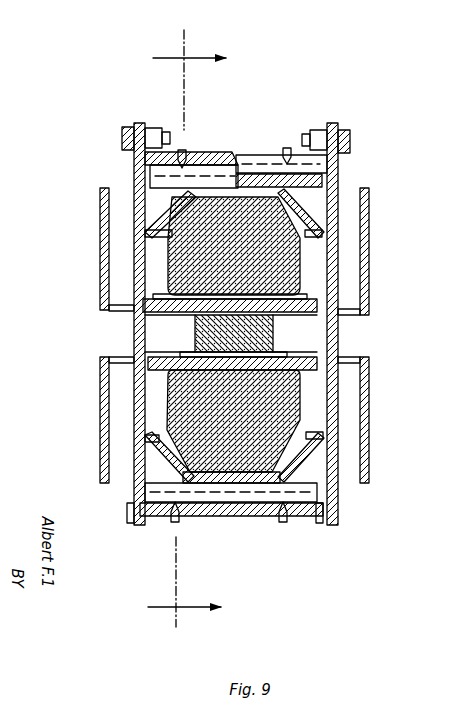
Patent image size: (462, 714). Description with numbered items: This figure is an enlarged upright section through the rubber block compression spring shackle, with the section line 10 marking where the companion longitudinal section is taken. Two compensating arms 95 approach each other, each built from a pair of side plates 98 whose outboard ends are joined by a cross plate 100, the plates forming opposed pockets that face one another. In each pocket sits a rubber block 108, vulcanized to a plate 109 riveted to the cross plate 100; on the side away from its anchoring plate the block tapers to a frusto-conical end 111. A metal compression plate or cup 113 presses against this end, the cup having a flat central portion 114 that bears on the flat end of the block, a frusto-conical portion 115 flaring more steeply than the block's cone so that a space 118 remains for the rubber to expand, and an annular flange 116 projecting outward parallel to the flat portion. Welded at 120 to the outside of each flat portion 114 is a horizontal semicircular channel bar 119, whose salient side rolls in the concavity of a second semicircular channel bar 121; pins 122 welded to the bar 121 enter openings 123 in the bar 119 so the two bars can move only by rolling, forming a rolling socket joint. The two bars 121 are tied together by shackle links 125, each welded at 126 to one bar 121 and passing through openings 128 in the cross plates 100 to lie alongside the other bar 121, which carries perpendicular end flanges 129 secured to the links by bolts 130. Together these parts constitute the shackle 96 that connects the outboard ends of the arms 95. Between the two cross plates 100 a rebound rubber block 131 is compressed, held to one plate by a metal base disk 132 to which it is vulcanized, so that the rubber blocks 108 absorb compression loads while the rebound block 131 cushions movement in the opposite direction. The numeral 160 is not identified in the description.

The section line 10— 10 is at (182, 331).
The compensating arm 95 is at (90, 238).
The shackle 96 is at (118, 517).
The side plates 98 is at (100, 200).
The cross plate 100 is at (287, 354).
The rubber block 108 is at (307, 252).
The plate 109 is at (330, 262).
The frusto-conical end 111 is at (325, 200).
The compression plate or cup 113 is at (150, 158).
The flat central portion 114 is at (222, 517).
The frusto-conical portion 115 is at (160, 200).
The annular flange 116 is at (150, 233).
The space 118 is at (110, 262).
The semicircular channel bar 119 is at (216, 152).
The weld 120 is at (338, 186).
The semicircular channel bar 121 is at (276, 152).
The pins 122 is at (183, 150).
The openings 123 is at (134, 150).
The shackle links 125 is at (134, 330).
The weld 126 is at (131, 524).
The openings 128 is at (112, 306).
The end flanges 129 is at (154, 128).
The bolts 130 is at (128, 127).
The rebound rubber block 131 is at (195, 331).
The metal base disk 132 is at (273, 344).
The upper center plate 160 is at (143, 305).